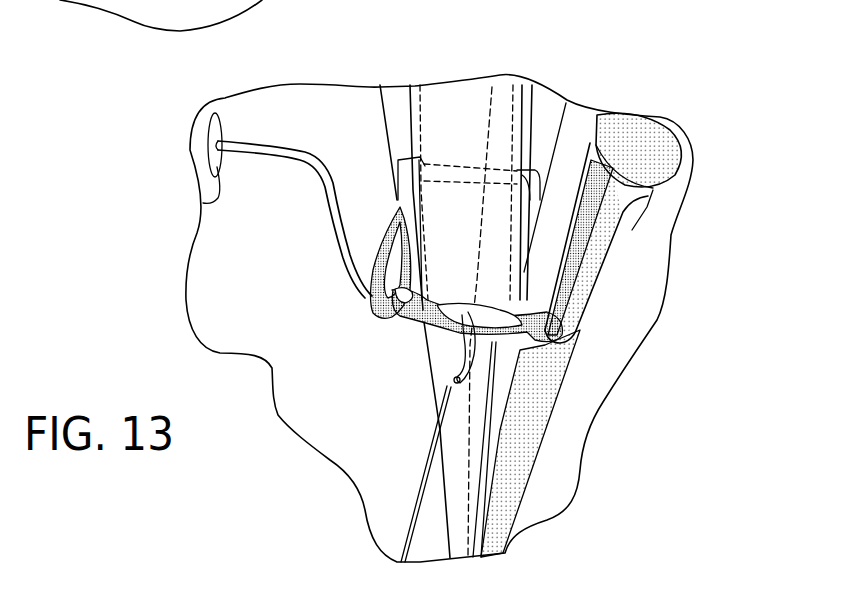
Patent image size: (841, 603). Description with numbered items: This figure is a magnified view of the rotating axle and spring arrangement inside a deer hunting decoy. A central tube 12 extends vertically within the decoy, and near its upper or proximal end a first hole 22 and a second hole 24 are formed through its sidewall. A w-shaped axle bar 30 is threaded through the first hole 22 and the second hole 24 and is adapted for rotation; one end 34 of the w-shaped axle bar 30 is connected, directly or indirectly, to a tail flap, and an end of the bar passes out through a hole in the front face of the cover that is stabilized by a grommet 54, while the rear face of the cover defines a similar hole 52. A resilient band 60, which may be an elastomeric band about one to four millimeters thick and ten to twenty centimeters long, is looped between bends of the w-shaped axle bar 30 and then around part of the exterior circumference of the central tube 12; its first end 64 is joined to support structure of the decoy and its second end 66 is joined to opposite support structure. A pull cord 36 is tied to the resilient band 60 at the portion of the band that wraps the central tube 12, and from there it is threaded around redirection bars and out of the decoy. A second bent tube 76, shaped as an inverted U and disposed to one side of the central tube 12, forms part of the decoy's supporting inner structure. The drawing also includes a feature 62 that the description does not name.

The central tube 12 is at (492, 87).
The first hole 22 is at (525, 190).
The second hole 24 is at (423, 163).
The w-shaped axle bar 30 is at (532, 187).
The end of the w-shaped axle bar 34 is at (227, 135).
The pull cord 36 is at (413, 513).
The hole 52 is at (217, 147).
The grommet 54 is at (210, 203).
The resilient band 60 is at (497, 337).
The suture loop 62 is at (486, 337).
The first end of the resilient band 64 is at (388, 235).
The second end of the resilient band 66 is at (578, 280).
The second bent tube 76 is at (562, 357).